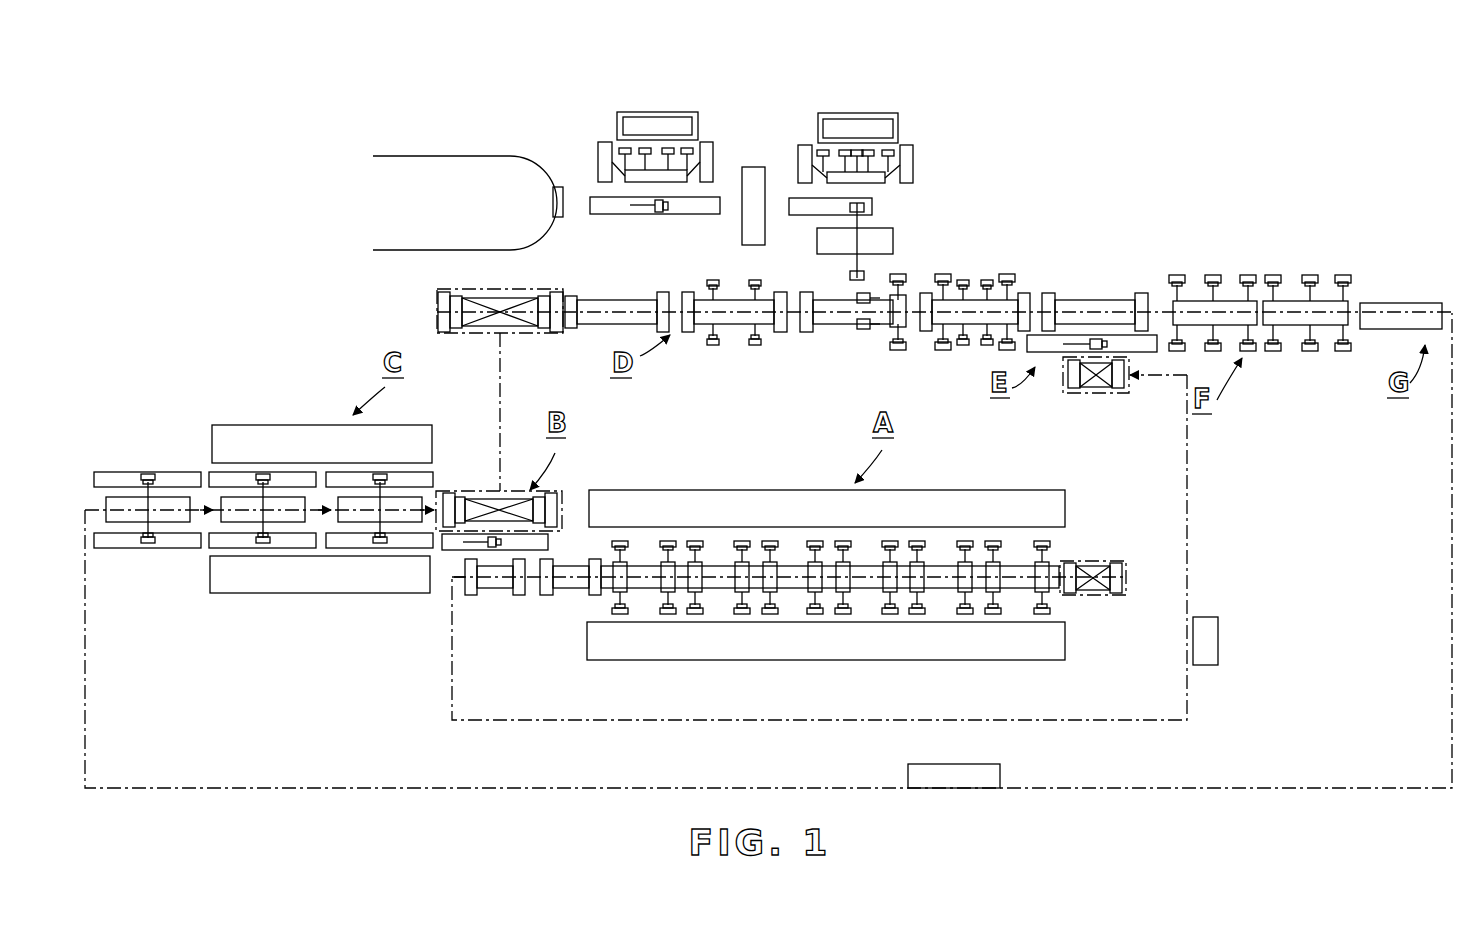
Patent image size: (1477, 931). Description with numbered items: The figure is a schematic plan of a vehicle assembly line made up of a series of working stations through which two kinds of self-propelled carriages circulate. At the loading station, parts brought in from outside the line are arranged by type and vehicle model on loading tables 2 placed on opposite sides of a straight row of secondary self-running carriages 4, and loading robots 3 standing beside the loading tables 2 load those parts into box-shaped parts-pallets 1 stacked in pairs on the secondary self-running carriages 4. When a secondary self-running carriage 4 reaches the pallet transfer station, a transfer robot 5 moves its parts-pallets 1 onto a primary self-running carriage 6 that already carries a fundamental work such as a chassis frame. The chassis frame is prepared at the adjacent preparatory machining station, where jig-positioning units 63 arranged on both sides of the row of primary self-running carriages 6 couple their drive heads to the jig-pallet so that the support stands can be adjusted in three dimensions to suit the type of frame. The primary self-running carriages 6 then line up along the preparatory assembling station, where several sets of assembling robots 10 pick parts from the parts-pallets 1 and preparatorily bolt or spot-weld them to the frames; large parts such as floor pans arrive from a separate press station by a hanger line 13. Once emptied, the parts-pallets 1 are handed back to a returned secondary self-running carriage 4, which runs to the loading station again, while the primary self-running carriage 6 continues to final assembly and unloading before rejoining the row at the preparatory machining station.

The parts-pallet 1 is at (553, 296).
The loading table 2 is at (783, 488).
The loading robot 3 is at (767, 543).
The secondary self-running carriage 4 is at (1097, 392).
The transfer robot 5 is at (485, 550).
The primary self-running carriage 6 is at (470, 294).
The assembling robot 10 is at (755, 340).
The hanger line 13 is at (463, 156).
The jig-positioning unit 63 is at (290, 430).